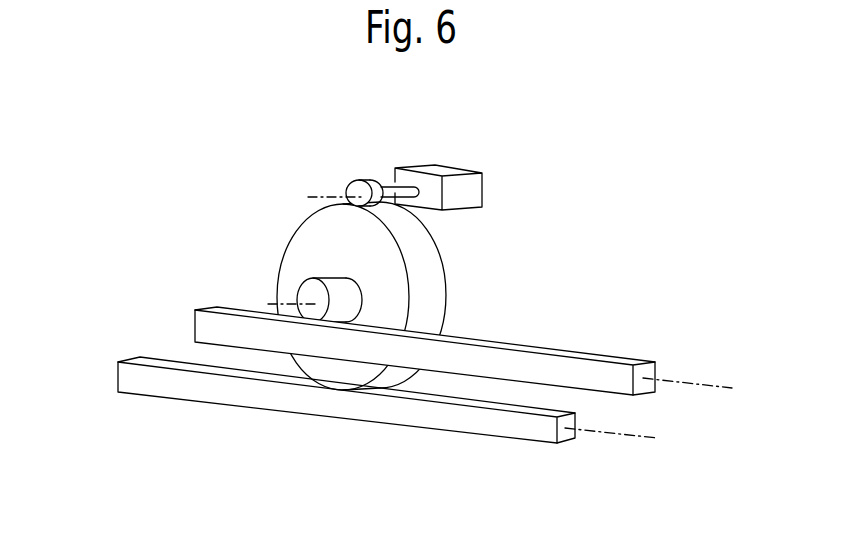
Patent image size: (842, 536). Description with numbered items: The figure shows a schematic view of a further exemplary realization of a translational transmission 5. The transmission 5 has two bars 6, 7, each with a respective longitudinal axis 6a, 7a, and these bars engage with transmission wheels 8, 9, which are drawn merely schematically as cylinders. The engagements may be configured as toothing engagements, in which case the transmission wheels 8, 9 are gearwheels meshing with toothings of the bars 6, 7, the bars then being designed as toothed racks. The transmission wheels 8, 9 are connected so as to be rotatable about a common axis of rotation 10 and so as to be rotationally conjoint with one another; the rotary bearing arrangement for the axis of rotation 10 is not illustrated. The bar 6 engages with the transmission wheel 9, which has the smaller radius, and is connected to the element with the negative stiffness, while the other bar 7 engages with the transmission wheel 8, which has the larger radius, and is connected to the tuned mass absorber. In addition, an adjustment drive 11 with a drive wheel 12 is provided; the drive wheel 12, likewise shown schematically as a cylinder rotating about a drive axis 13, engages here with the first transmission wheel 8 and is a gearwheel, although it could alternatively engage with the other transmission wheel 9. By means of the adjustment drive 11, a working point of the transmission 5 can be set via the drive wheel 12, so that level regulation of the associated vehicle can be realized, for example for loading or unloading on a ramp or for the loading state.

The translational transmission 5 is at (513, 192).
The bar 6 is at (205, 325).
The longitudinal axis 6a is at (678, 382).
The bar 7 is at (122, 380).
The longitudinal axis 7a is at (620, 435).
The transmission wheel 8 is at (310, 233).
The transmission wheel 9 is at (312, 293).
The axis of rotation 10 is at (268, 304).
The adjustment drive 11 is at (445, 166).
The drive wheel 12 is at (365, 180).
The drive axis 13 is at (318, 196).